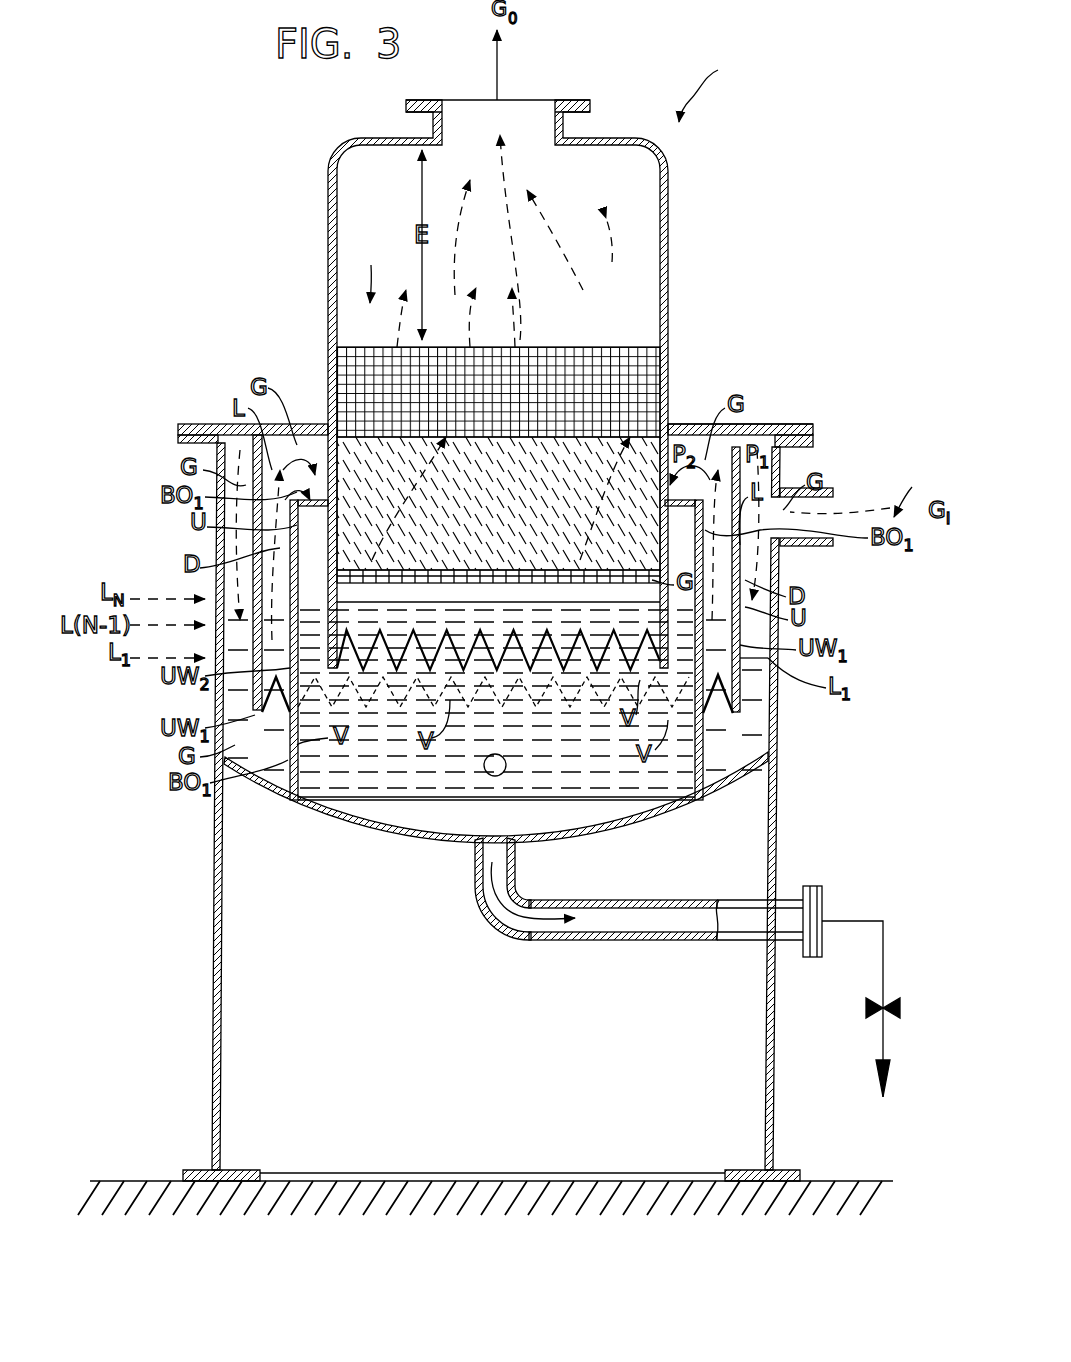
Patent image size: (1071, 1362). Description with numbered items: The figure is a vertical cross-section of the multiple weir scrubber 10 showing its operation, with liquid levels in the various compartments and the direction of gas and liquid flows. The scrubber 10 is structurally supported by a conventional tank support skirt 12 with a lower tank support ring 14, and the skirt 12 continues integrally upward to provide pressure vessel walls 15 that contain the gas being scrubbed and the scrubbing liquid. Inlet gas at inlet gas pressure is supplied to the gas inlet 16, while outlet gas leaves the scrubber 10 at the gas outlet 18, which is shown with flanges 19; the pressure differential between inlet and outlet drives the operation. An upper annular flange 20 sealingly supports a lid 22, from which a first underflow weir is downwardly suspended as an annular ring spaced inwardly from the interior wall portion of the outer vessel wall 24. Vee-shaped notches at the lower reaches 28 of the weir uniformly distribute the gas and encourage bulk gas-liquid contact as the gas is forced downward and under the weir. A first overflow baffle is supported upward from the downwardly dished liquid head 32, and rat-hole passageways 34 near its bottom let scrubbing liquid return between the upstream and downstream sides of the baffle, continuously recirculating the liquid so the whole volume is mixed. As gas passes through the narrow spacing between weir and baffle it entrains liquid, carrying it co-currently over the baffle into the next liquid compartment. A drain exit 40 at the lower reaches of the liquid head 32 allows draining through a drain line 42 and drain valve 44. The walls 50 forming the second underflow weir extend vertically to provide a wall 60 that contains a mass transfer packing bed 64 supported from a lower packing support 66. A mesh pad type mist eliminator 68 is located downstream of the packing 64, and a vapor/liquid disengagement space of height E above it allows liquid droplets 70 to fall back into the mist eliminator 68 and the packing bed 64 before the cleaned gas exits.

The multiple weir scrubber 10 is at (718, 70).
The tank support skirt 12 is at (773, 1115).
The lower tank support ring 14 is at (788, 1170).
The pressure vessel walls 15 is at (748, 680).
The gas inlet 16 is at (818, 546).
The gas outlet 18 is at (562, 100).
The flanges 19 is at (571, 106).
The upper annular flange 20 is at (813, 443).
The lid 22 is at (800, 427).
The outer vessel wall 24 is at (254, 545).
The lower reaches of weir 28 is at (262, 695).
The liquid head 32 is at (445, 840).
The rat-hole passageways 34 is at (296, 748).
The drain exit 40 is at (505, 858).
The drain line 42 is at (676, 900).
The drain valve 44 is at (866, 1008).
The walls 50 is at (335, 600).
The wall 60 is at (668, 193).
The mass transfer packing bed 64 is at (375, 455).
The lower packing support 66 is at (425, 560).
The mist eliminator 68 is at (628, 362).
The liquid droplets 70 is at (373, 262).